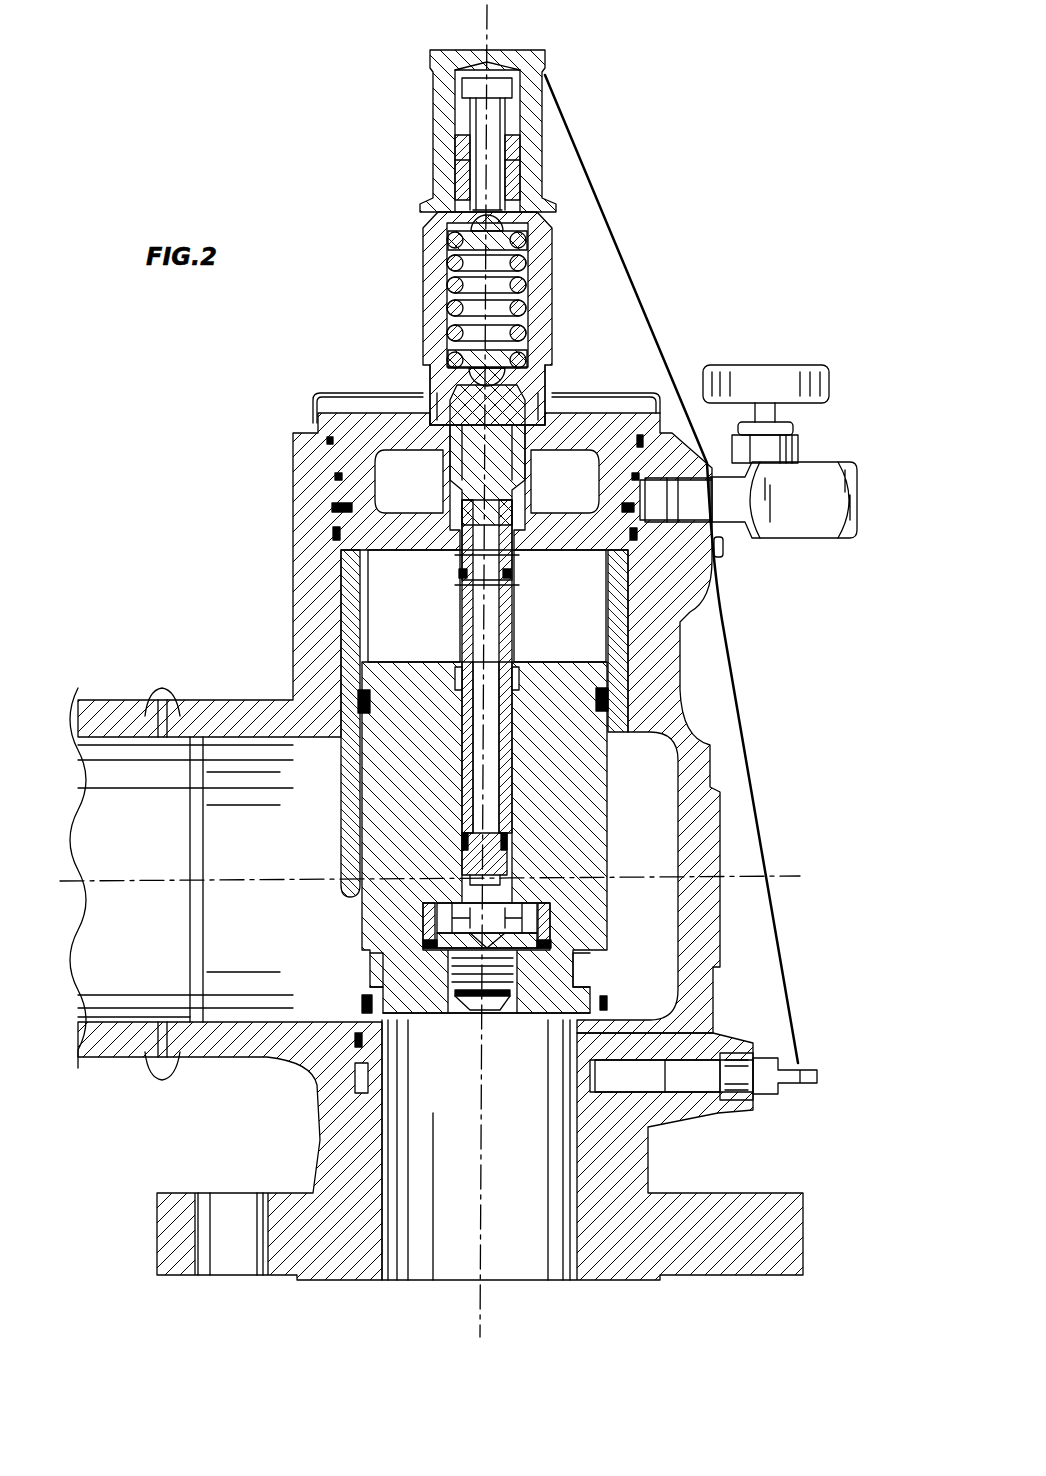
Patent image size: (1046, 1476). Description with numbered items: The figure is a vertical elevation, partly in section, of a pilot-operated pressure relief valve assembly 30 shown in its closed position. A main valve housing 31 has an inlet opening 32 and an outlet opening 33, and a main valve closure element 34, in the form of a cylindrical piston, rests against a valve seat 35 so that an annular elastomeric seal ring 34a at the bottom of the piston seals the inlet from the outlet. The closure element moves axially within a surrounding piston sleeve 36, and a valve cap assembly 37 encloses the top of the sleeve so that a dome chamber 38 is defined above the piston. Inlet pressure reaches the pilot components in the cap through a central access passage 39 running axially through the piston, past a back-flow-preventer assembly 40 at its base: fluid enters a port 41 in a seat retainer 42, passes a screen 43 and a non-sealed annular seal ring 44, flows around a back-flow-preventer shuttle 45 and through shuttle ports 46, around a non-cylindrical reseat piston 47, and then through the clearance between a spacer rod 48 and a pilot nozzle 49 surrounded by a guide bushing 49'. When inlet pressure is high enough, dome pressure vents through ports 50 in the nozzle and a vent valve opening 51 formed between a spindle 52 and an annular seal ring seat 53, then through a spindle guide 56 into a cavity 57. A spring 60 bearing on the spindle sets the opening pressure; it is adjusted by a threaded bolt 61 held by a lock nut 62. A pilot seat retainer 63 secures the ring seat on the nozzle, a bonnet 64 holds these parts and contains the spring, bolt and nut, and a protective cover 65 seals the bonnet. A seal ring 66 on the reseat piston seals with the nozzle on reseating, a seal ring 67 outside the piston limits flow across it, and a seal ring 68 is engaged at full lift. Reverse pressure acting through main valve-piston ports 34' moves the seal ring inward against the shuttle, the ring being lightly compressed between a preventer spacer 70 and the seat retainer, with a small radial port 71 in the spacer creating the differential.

The relief valve assembly 30 is at (141, 508).
The main valve housing 31 is at (695, 743).
The inlet opening 32 is at (537, 1137).
The outlet opening 33 is at (250, 867).
The main valve closure element 34 is at (449, 837).
The main valve-piston ports 34' is at (441, 969).
The annular elastomeric seal ring 34a is at (362, 1005).
The valve seat 35 is at (603, 1007).
The piston sleeve 36 is at (345, 795).
The valve cap assembly 37 is at (432, 565).
The dome chamber 38 is at (600, 625).
The central access passage 39 is at (497, 747).
The back-flow-preventer assembly 40 is at (476, 1048).
The port 41 is at (488, 1010).
The seat retainer 42 is at (417, 1003).
The screen 43 is at (478, 1000).
The annular elastomeric seal ring 44 is at (578, 943).
The back-flow-preventer shuttle 45 is at (540, 908).
The shuttle ports 46 is at (440, 918).
The reseat piston 47 is at (500, 858).
The spacer rod 48 is at (470, 768).
The pilot nozzle 49 is at (471, 653).
The guide bushing 49' is at (343, 672).
The ports 50 is at (512, 578).
The vent valve opening 51 is at (443, 400).
The spindle 52 is at (528, 318).
The annular elastomeric seal ring seat 53 is at (590, 413).
The spindle guide 56 is at (518, 385).
The cavity 57 is at (410, 492).
The spring 60 is at (530, 283).
The threaded bolt 61 is at (495, 118).
The lock nut 62 is at (520, 138).
The pilot seat retainer 63 is at (518, 543).
The bonnet 64 is at (545, 262).
The protective cover 65 is at (505, 50).
The seal ring 66 is at (510, 840).
The annular elastomeric seal ring 67 is at (608, 698).
The elastomeric annular seal ring 68 is at (458, 585).
The preventer spacer 70 is at (535, 930).
The small radial port 71 is at (423, 915).